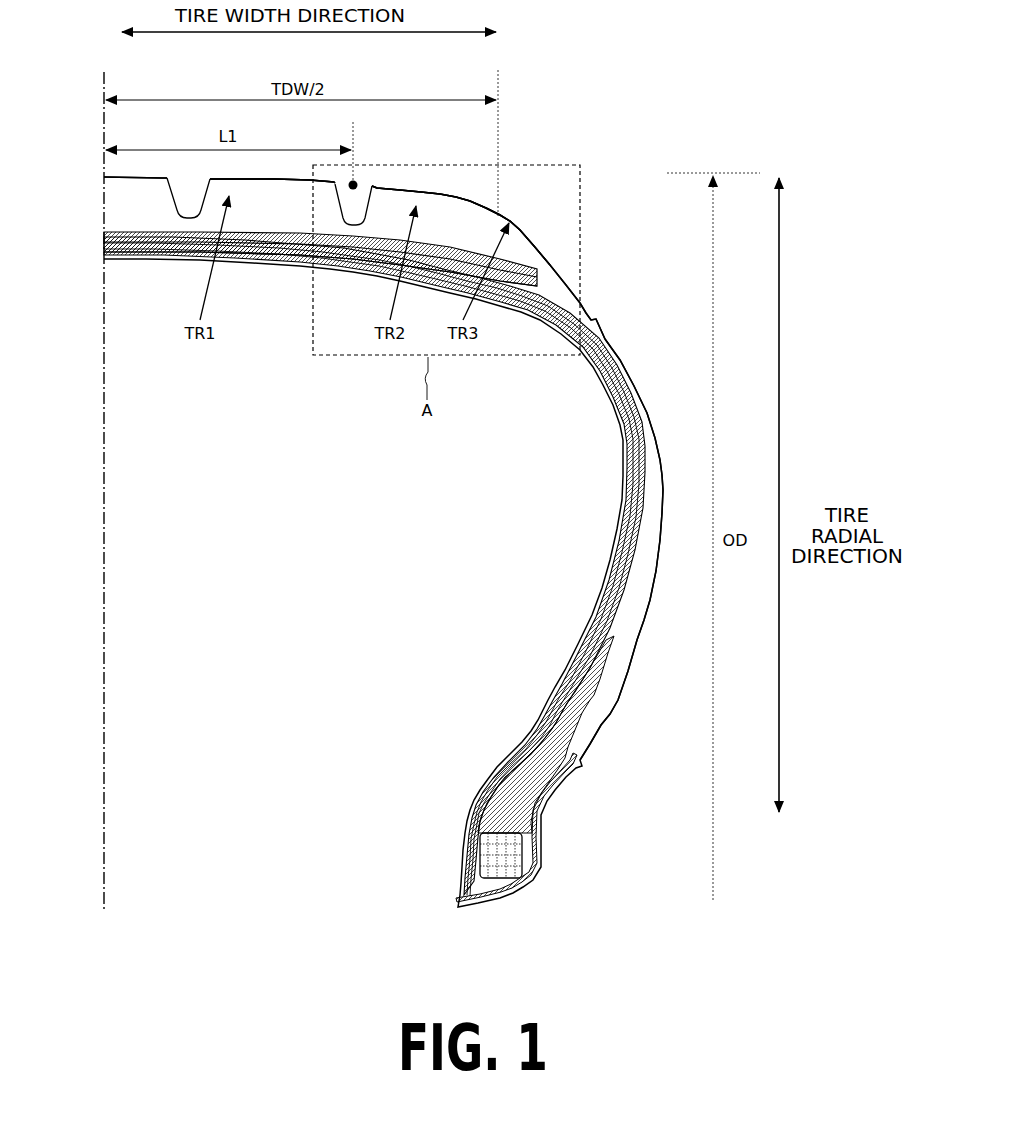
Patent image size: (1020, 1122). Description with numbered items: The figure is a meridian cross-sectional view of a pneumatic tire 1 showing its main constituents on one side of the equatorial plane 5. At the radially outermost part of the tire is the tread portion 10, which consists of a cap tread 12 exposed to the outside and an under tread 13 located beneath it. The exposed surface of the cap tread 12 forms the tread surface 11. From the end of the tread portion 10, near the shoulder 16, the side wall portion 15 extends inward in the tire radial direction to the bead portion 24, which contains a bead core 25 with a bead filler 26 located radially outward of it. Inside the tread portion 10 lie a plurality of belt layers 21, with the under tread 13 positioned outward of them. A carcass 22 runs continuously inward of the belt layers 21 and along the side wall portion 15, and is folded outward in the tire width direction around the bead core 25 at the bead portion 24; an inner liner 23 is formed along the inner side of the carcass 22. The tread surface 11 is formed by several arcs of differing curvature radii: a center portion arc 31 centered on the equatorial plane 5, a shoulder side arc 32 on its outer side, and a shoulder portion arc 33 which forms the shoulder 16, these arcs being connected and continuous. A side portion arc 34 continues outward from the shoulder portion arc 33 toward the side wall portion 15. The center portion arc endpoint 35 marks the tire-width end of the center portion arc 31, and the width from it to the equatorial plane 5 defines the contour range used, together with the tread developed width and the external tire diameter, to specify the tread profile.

The pneumatic tire 1 is at (575, 142).
The equatorial plane 5 is at (100, 84).
The tread portion 10 is at (106, 207).
The tread surface 11 is at (306, 180).
The cap tread 12 is at (128, 186).
The under tread 13 is at (151, 222).
The side wall portion 15 is at (657, 416).
The shoulder 16 is at (506, 212).
The belt layers 21 is at (104, 244).
The carcass 22 is at (256, 262).
The inner liner 23 is at (345, 262).
The bead portion 24 is at (462, 868).
The bead core 25 is at (505, 905).
The bead filler 26 is at (480, 797).
The center portion arc 31 is at (255, 178).
The shoulder side arc 32 is at (429, 188).
The shoulder portion arc 33 is at (523, 228).
The side portion arc 34 is at (553, 264).
The center portion arc endpoint 35 is at (357, 182).